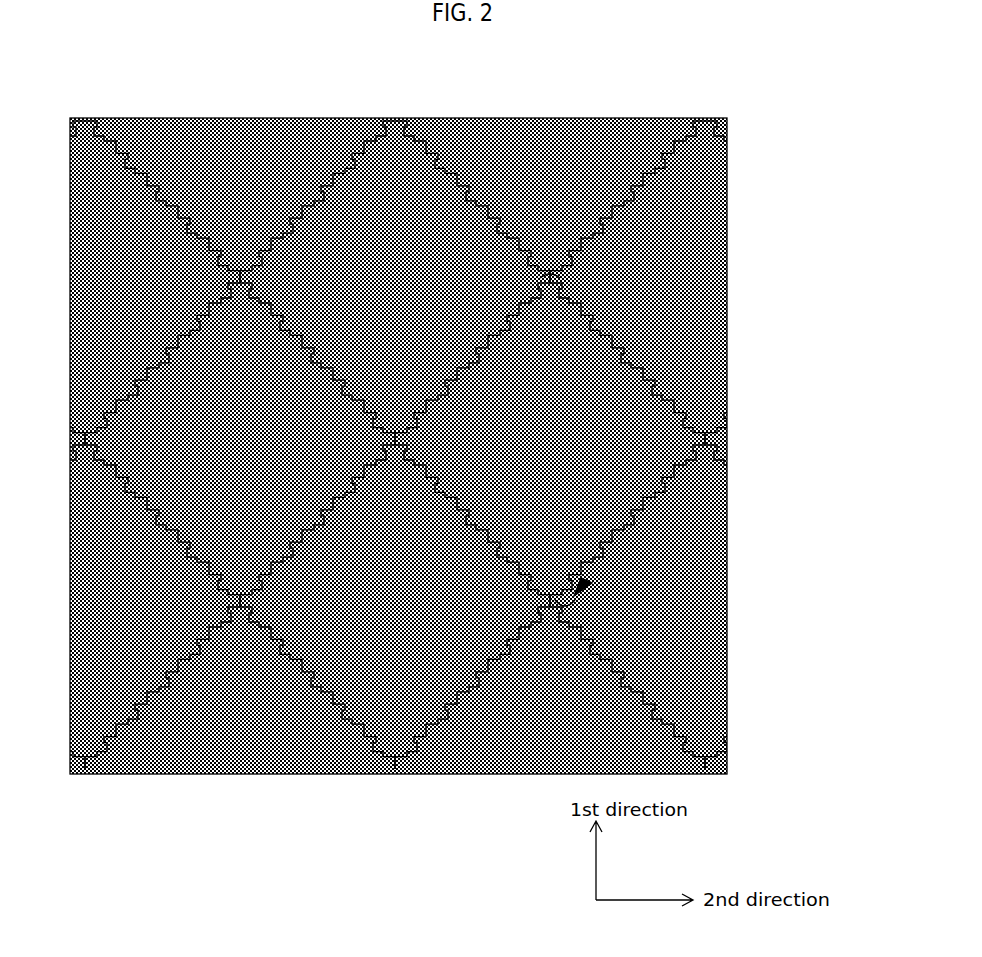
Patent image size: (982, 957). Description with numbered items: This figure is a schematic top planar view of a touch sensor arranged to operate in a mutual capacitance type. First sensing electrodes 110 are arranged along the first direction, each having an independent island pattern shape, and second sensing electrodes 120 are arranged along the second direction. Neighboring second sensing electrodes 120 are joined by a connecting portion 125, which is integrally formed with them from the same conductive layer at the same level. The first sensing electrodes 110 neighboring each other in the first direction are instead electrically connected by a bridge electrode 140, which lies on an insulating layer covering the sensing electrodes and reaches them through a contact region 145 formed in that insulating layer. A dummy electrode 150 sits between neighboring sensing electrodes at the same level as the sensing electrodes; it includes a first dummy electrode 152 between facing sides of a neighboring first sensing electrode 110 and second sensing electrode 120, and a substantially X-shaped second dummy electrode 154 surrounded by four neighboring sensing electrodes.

The first sensing electrode 110 is at (500, 774).
The second sensing electrode 120 is at (707, 658).
The connecting portion 125 is at (564, 276).
The bridge electrode 140 is at (568, 610).
The contact region 145 is at (588, 584).
The dummy electrode 150 is at (430, 445).
The first dummy electrode 152 is at (657, 380).
The second dummy electrode 154 is at (405, 448).